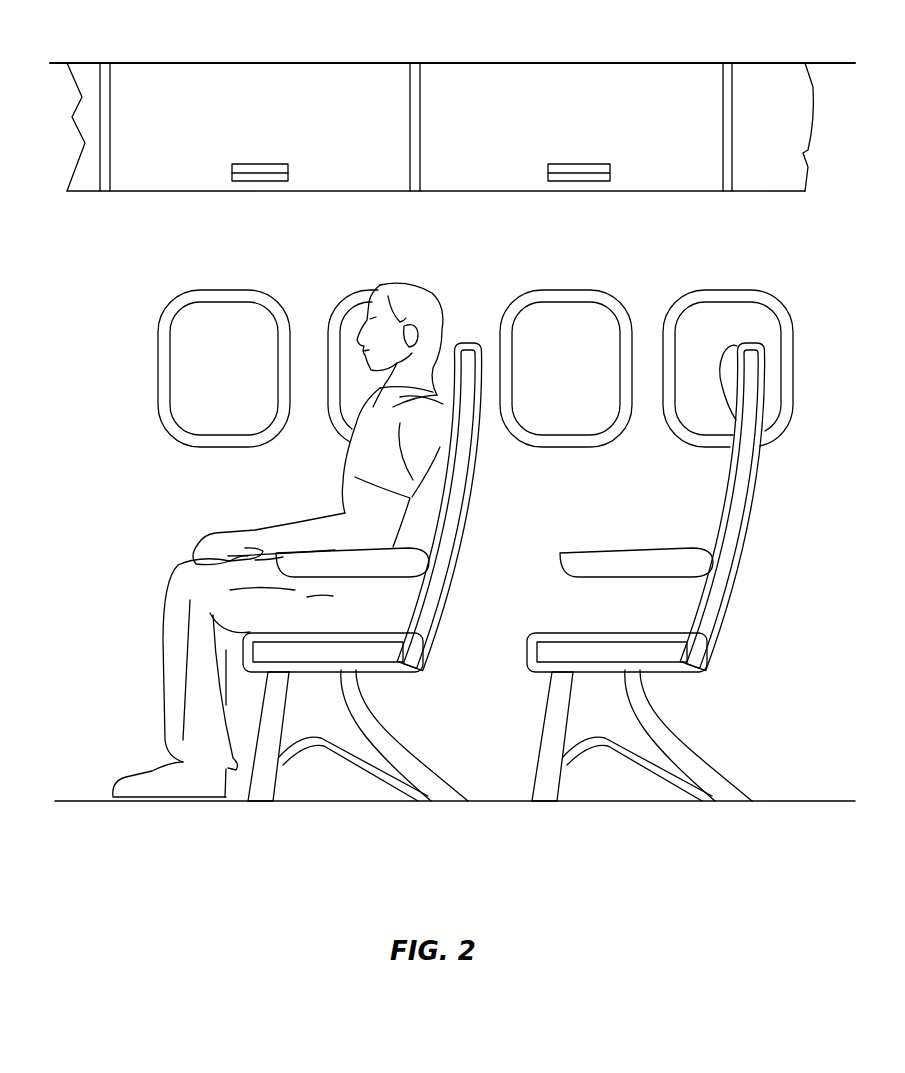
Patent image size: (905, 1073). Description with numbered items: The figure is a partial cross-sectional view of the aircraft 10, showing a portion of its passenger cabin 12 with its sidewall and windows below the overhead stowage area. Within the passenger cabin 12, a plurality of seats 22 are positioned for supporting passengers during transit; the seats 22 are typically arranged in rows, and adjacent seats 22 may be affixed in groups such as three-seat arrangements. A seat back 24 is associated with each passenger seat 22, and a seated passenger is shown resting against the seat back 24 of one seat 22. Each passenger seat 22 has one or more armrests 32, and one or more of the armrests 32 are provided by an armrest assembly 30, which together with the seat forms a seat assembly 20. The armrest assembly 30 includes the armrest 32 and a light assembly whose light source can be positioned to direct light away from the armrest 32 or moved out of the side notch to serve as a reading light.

The aircraft 10 is at (217, 62).
The passenger cabin 12 is at (142, 258).
The seat assembly 20 is at (694, 572).
The seat 22 is at (607, 631).
The seat back 24 is at (468, 387).
The armrest assembly 30 is at (494, 561).
The armrest 32 is at (405, 572).